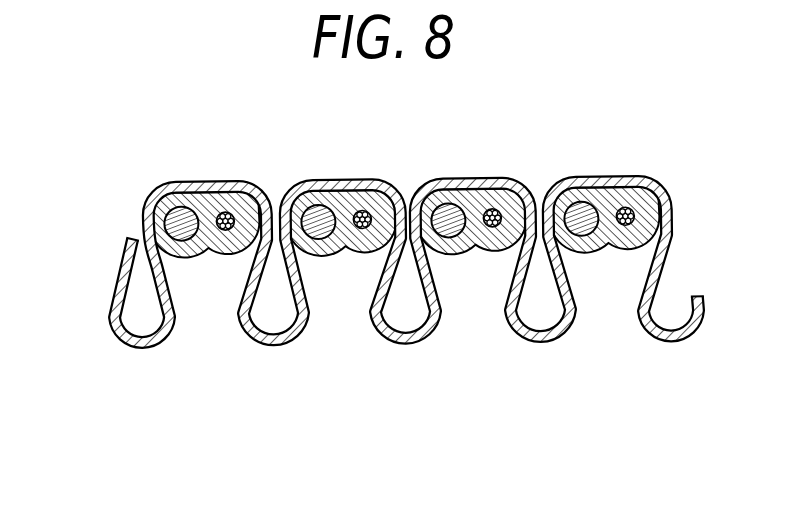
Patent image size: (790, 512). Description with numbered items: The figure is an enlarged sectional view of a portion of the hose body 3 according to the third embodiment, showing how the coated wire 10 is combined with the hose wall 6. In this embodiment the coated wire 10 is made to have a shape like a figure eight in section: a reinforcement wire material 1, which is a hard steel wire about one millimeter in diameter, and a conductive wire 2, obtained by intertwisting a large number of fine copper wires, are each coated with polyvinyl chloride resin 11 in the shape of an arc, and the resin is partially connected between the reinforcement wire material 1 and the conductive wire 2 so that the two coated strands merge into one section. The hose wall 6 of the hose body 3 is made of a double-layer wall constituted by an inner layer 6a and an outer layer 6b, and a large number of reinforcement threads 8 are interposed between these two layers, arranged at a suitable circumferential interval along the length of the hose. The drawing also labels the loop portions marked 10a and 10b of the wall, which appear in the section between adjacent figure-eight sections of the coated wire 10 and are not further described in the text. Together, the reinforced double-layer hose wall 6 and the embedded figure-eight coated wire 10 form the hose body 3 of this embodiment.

The reinforcement wire material 1 is at (588, 205).
The conductive wire 2 is at (629, 210).
The hose body 3 is at (151, 173).
The hose wall 6 is at (471, 183).
The inner layer 6a is at (287, 190).
The outer layer 6b is at (378, 187).
The reinforcement threads 8 is at (342, 183).
The coated wire 10 is at (608, 282).
The first loop 10a is at (202, 290).
The second loop 10b is at (340, 294).
The polyvinyl chloride resin 11 is at (487, 240).